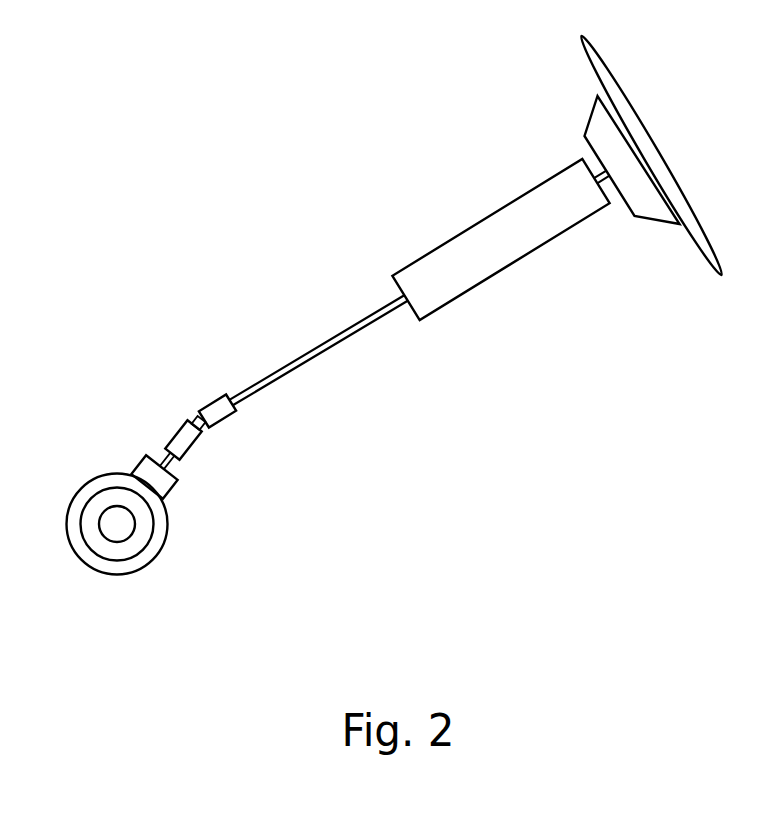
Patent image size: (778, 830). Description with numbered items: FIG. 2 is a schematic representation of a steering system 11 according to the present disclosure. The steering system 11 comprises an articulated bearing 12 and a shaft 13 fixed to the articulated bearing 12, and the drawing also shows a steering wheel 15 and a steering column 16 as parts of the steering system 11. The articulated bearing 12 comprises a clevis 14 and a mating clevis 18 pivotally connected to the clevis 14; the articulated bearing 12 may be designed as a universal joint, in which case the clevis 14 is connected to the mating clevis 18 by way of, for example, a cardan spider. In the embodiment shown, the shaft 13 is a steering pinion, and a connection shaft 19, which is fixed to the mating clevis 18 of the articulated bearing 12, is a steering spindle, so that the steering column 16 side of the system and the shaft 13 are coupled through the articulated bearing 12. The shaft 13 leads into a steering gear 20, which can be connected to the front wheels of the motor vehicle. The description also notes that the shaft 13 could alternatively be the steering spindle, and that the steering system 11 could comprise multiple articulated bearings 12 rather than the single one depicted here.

The steering system 11 is at (232, 152).
The articulated bearing 12 is at (152, 411).
The shaft 13 is at (173, 463).
The clevis 14 is at (193, 448).
The steering wheel 15 is at (587, 53).
The steering column 16 is at (518, 240).
The mating clevis 18 is at (205, 403).
The connection shaft 19 is at (325, 352).
The steering gear 20 is at (160, 523).